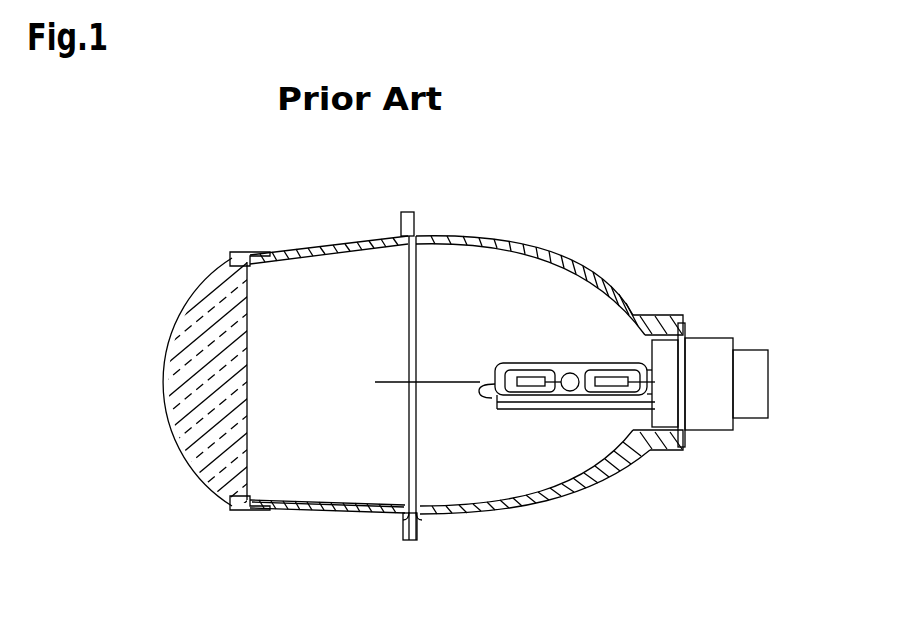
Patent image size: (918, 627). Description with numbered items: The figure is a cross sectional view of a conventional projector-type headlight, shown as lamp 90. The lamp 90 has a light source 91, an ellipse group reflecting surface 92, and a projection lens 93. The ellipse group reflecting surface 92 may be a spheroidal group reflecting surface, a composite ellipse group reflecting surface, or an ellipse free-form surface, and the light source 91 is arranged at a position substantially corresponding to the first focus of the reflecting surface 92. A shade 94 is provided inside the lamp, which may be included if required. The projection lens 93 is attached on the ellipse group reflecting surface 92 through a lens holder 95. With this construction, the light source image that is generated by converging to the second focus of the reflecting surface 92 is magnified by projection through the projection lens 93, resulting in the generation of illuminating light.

The lamp 90 is at (600, 206).
The light source 91 is at (573, 372).
The ellipse group reflecting surface 92 is at (565, 500).
The projection lens 93 is at (190, 308).
The shade 94 is at (416, 462).
The lens holder 95 is at (310, 510).